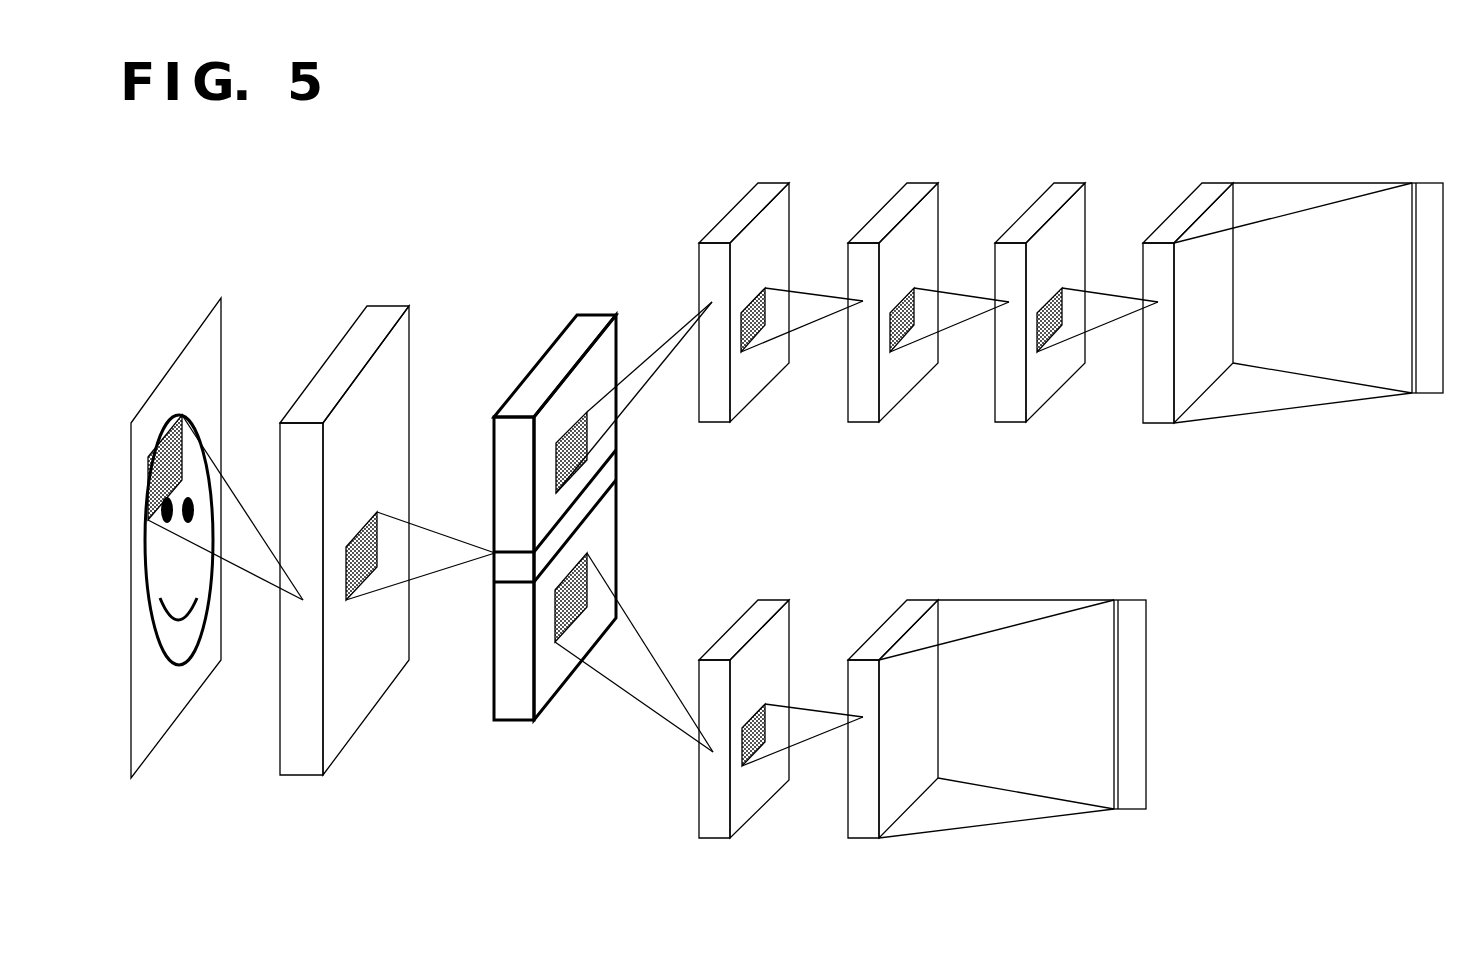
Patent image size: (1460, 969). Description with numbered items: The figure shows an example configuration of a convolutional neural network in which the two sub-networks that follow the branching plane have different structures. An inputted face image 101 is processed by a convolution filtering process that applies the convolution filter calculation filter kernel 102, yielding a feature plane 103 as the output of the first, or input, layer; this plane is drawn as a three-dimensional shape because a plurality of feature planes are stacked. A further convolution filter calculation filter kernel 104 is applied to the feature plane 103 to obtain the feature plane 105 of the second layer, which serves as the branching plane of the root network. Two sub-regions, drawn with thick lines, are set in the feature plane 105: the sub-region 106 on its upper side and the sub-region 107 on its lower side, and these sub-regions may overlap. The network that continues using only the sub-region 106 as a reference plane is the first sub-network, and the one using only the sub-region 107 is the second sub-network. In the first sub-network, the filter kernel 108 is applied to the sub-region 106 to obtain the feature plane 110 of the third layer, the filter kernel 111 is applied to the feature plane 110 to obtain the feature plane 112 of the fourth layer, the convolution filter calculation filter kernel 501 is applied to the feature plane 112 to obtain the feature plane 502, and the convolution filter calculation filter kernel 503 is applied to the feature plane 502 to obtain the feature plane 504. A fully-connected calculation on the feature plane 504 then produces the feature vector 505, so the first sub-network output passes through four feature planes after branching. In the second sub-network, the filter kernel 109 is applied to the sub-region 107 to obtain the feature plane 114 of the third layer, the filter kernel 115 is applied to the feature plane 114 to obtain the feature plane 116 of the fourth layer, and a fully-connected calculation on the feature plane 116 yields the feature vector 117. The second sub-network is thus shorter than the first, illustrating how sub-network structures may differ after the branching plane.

The image 101 is at (181, 353).
The filter kernel 102 is at (149, 462).
The feature plane 103 is at (325, 358).
The filter kernel 104 is at (363, 520).
The feature plane 105 is at (508, 484).
The sub-region 106 is at (538, 362).
The sub-region 107 is at (494, 689).
The filter kernel 108 is at (588, 433).
The filter kernel 109 is at (588, 582).
The feature plane 110 is at (737, 205).
The filter kernel 111 is at (752, 302).
The feature plane 112 is at (887, 205).
The filter kernel 501 is at (900, 300).
The feature plane 502 is at (1033, 205).
The filter kernel 503 is at (1047, 300).
The feature plane 504 is at (1180, 207).
The feature vector 505 is at (1425, 183).
The feature plane 114 is at (737, 622).
The filter kernel 115 is at (752, 720).
The feature plane 116 is at (887, 625).
The feature vector 117 is at (1128, 600).